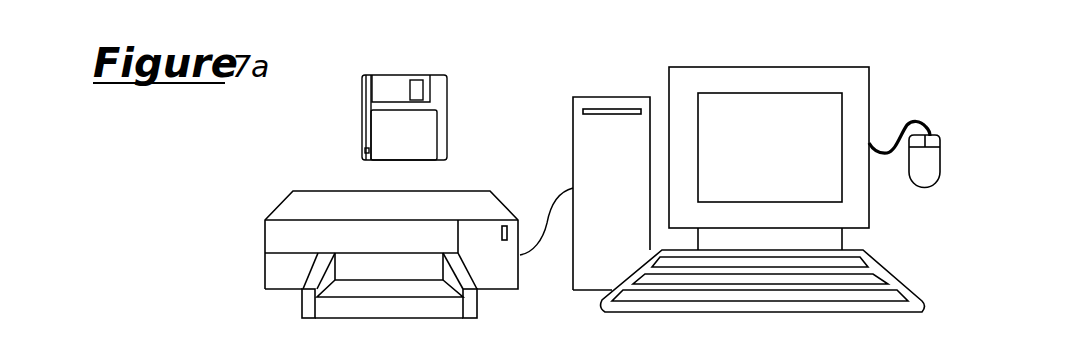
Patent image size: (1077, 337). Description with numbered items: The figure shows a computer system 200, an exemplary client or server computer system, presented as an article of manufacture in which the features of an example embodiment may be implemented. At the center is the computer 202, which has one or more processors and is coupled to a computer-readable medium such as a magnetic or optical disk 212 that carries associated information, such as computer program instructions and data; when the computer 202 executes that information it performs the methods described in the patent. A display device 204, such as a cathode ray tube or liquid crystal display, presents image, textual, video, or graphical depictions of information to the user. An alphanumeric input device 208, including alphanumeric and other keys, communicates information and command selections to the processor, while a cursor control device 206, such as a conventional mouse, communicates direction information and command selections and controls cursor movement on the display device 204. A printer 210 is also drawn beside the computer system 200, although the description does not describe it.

The computer system 200 is at (880, 50).
The computer 202 is at (613, 98).
The display device 204 is at (871, 103).
The cursor control device 206 is at (940, 163).
The alphanumeric input device 208 is at (922, 300).
The printer 210 is at (267, 212).
The magnetic or optical disk 212 is at (357, 132).